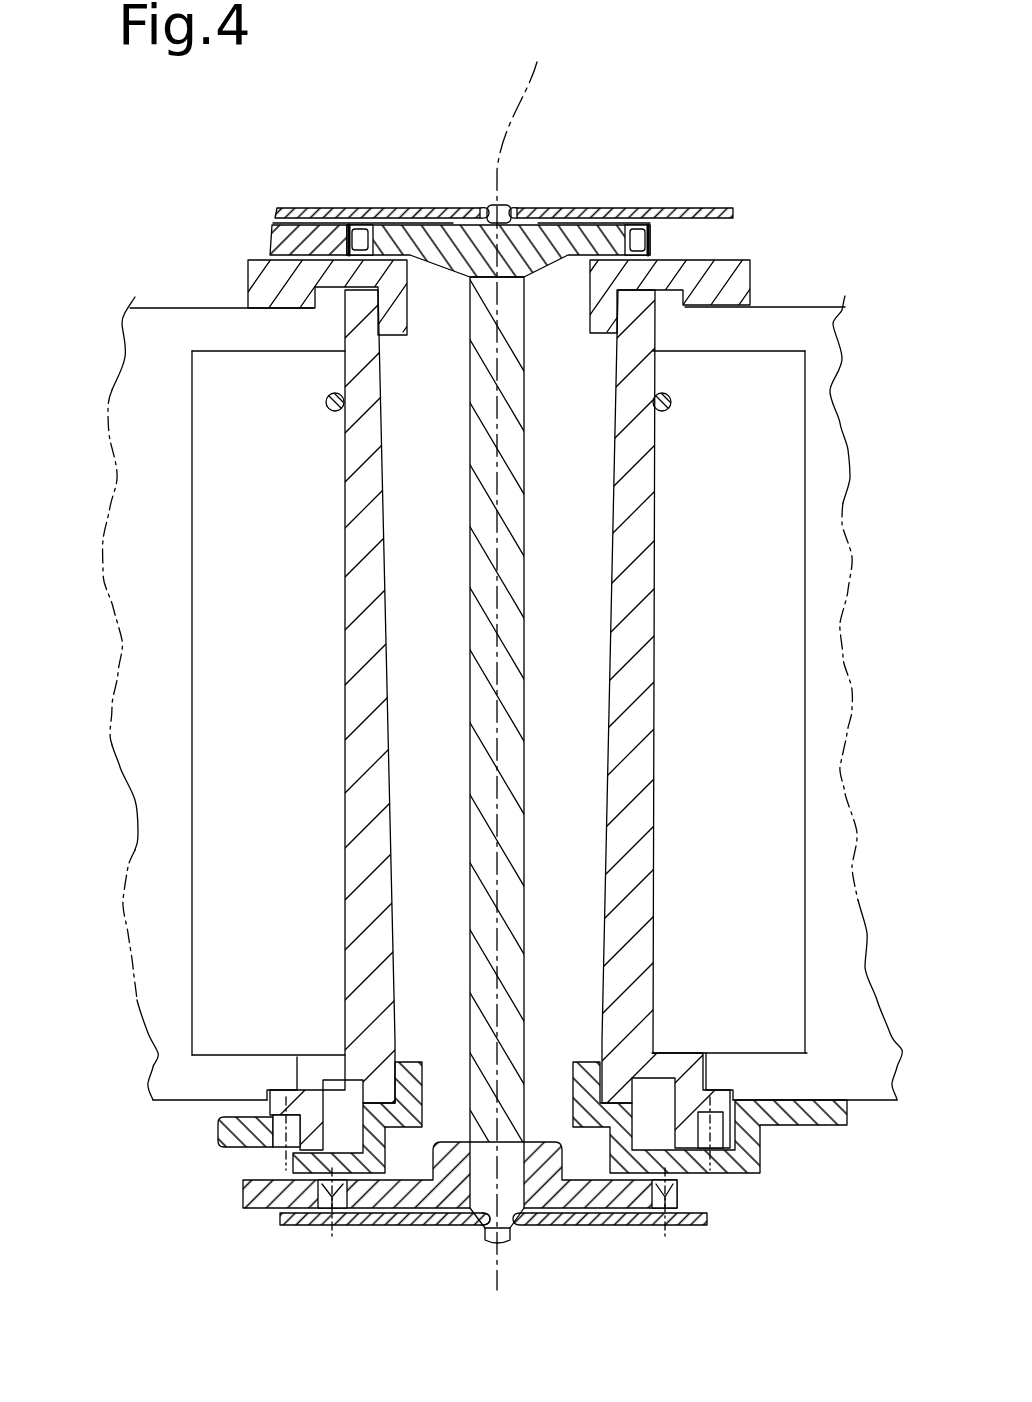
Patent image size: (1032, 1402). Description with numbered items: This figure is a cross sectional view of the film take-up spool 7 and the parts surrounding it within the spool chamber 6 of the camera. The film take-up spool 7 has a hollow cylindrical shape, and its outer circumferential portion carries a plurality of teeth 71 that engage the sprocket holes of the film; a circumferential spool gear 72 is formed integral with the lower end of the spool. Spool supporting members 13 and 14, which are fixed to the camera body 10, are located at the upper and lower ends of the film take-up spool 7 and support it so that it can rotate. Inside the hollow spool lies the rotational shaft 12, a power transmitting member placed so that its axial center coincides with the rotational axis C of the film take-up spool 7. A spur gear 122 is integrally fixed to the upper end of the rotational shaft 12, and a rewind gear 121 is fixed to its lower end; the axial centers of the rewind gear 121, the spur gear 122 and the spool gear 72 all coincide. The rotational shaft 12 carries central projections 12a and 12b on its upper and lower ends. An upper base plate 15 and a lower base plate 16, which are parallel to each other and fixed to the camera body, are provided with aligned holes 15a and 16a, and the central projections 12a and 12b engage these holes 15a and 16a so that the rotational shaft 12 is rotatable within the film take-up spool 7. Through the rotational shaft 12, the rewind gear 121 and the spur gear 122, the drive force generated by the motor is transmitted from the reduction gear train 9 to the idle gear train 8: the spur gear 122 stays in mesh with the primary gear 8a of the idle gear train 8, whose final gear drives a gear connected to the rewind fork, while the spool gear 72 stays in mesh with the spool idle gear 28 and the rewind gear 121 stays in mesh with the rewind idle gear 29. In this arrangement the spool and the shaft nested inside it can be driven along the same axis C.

The spool chamber 6 is at (242, 546).
The film take-up spool 7 is at (662, 680).
The idle gear train 8 is at (448, 165).
The primary gear 8a is at (300, 235).
The reduction gear train 9 is at (136, 1222).
The camera body 10 is at (142, 417).
The rotational shaft 12 is at (623, 705).
The central projection 12a is at (507, 208).
The central projection 12b is at (503, 1225).
The spool supporting member 13 is at (270, 287).
The spool supporting member 14 is at (838, 1122).
The upper base plate 15 is at (503, 149).
The hole 15a is at (487, 207).
The lower base plate 16 is at (493, 1271).
The hole 16a is at (487, 1228).
The spool idle gear 28 is at (280, 1140).
The rewind idle gear 29 is at (266, 1200).
The teeth 71 is at (327, 400).
The spool gear 72 is at (272, 1148).
The rewind gear 121 is at (331, 1210).
The spur gear 122 is at (360, 240).
The rotational axis C is at (521, 660).